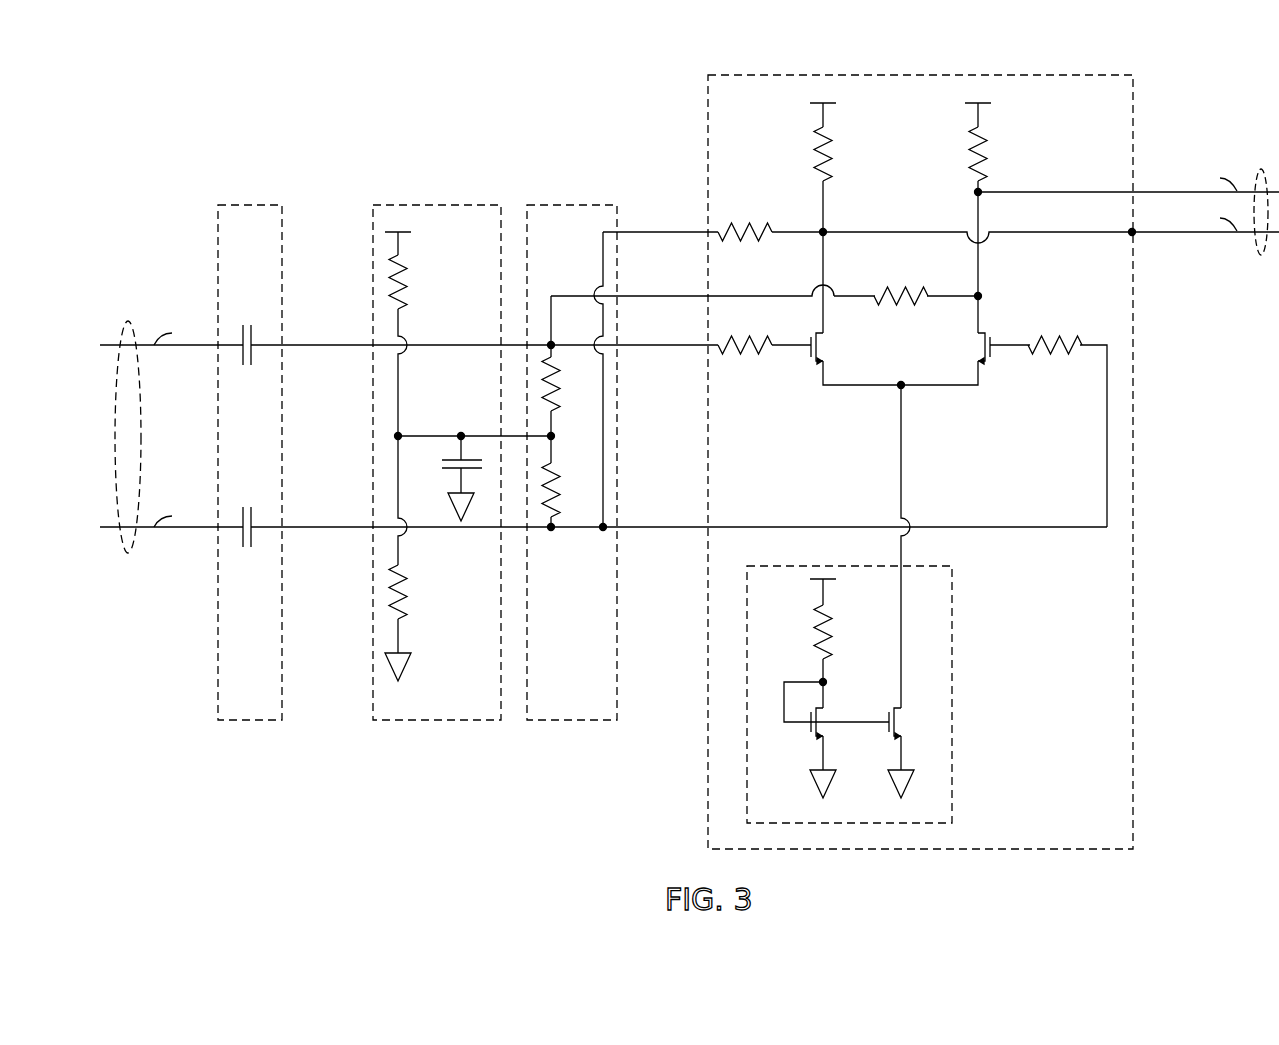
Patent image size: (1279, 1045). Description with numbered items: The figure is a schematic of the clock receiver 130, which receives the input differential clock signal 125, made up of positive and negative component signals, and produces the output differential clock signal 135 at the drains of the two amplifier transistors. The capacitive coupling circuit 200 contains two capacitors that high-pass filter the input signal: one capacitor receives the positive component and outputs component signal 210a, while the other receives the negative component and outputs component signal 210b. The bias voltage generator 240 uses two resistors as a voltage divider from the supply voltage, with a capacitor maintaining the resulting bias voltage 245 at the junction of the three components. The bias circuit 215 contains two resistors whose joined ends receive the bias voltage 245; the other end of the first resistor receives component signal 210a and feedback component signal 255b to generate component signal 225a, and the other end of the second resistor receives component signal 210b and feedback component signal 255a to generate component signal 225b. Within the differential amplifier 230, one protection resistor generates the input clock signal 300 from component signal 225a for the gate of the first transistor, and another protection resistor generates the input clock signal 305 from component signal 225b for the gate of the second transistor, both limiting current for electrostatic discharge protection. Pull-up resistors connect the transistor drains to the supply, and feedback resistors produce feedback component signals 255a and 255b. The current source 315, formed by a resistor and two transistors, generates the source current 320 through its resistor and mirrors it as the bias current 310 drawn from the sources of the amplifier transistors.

The clock receiver 130 is at (178, 76).
The input differential clock signal 125 is at (130, 320).
The output differential clock signal 135 is at (1258, 168).
The capacitive coupling circuit 200 is at (250, 204).
The bias voltage generator 240 is at (462, 450).
The bias circuit 215 is at (572, 204).
The differential amplifier 230 is at (707, 127).
The component signal of the filtered differential clock signal 210a is at (360, 345).
The component signal of the filtered differential clock signal 210b is at (360, 527).
The component signal of the biased differential clock signal 225a is at (696, 344).
The component signal of the biased differential clock signal 225b is at (696, 526).
The component signal of the feedback differential clock signal 255a is at (696, 231).
The component signal of the feedback differential clock signal 255b is at (696, 295).
The bias voltage 245 is at (485, 435).
The input clock signal 300 is at (800, 353).
The input clock signal 305 is at (998, 353).
The bias current 310 is at (900, 462).
The current source 315 is at (849, 565).
The source current 320 is at (826, 676).